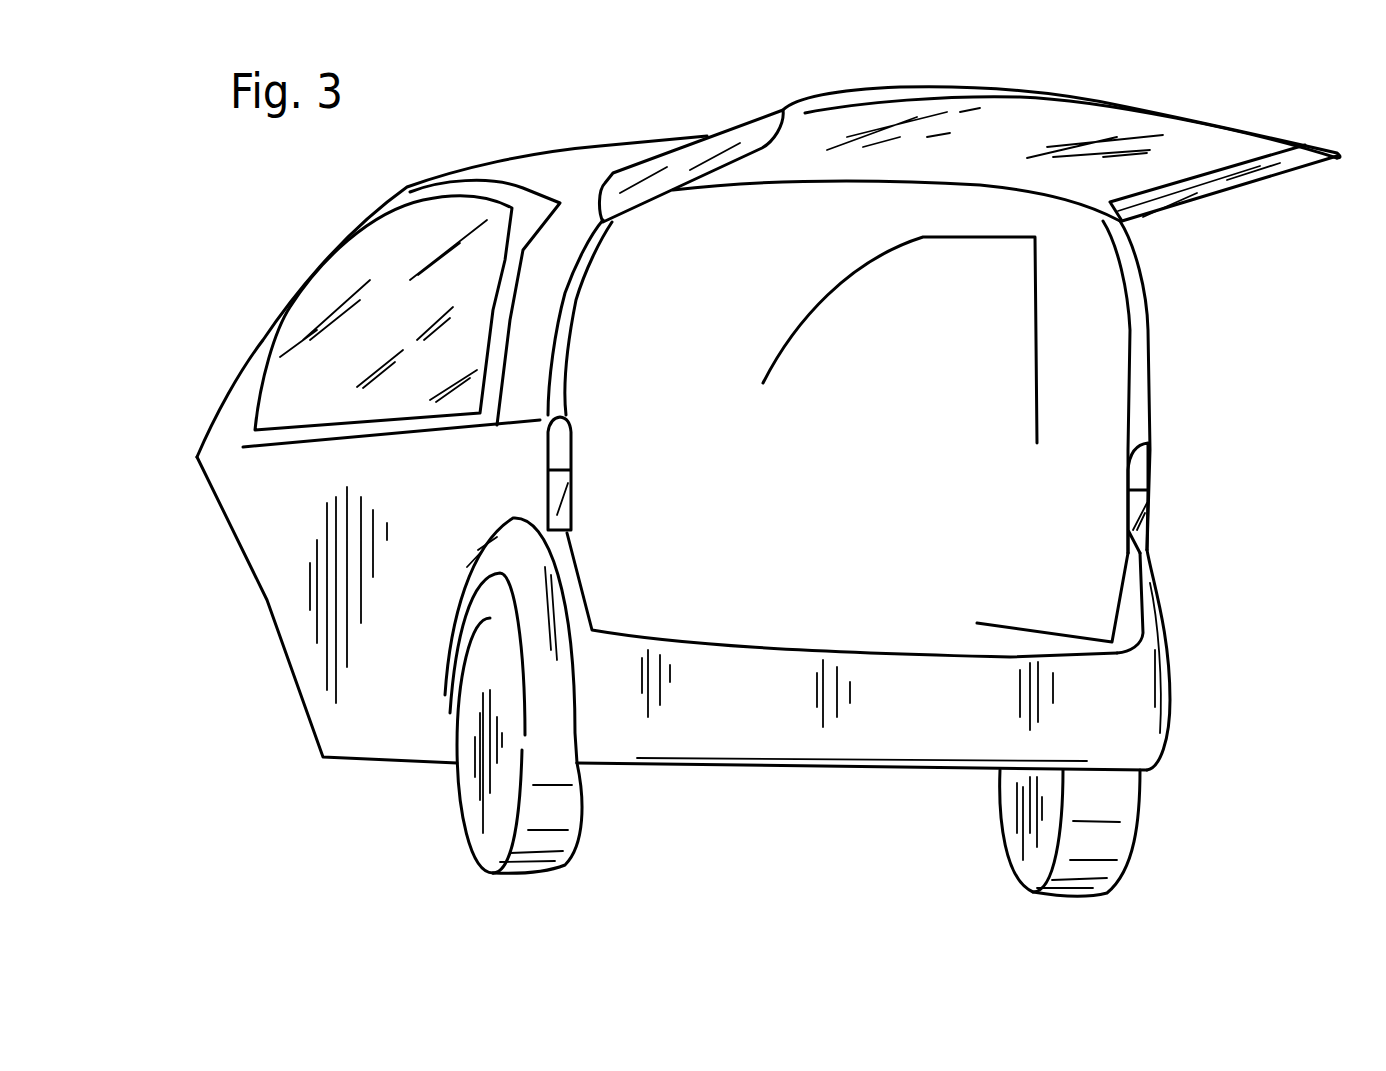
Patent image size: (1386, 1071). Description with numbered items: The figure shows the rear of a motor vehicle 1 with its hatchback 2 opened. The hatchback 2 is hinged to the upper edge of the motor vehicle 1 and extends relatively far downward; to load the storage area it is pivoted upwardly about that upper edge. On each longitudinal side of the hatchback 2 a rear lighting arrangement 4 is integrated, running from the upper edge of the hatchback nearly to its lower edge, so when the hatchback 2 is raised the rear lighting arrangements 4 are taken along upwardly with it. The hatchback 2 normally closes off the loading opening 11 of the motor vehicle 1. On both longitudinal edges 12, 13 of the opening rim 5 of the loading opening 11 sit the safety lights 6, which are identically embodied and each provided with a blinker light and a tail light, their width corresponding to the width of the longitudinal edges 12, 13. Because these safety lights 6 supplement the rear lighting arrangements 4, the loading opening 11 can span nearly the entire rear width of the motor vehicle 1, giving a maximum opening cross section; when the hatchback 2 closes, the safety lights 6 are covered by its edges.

The motor vehicle 1 is at (408, 176).
The hatchback 2 is at (1017, 122).
The rear lighting arrangement 4 is at (718, 152).
The opening rim 5 is at (557, 387).
The safety light 6 is at (577, 497).
The loading opening 11 is at (1012, 540).
The longitudinal edge of the loading opening 12 is at (563, 283).
The longitudinal edge of the loading opening 13 is at (1140, 348).